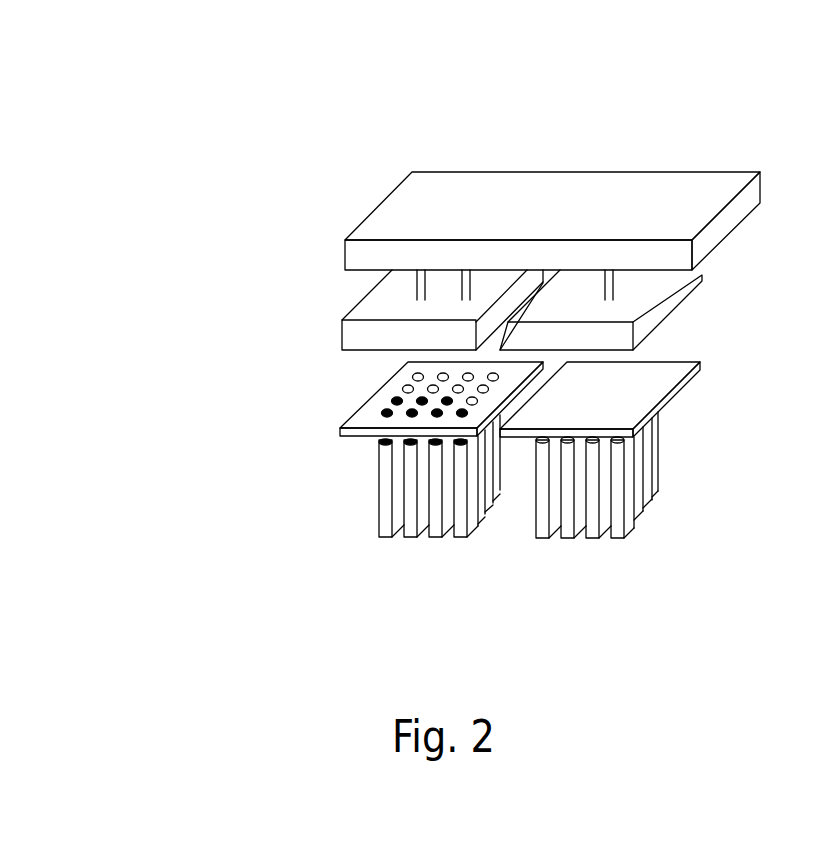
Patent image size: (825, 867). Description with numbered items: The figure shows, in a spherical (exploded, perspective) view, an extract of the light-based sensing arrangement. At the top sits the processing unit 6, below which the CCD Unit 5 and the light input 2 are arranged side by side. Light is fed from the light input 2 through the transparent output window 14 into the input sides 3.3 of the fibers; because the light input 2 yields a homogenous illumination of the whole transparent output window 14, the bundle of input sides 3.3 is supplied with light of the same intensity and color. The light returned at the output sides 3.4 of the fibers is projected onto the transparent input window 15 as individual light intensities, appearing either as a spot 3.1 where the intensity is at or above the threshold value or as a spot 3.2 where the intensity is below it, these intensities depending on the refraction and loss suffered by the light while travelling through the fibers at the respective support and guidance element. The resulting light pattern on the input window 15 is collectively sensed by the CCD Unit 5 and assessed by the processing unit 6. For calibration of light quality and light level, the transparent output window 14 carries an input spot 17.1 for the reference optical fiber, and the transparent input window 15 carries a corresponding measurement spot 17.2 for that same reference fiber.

The processing unit 6 is at (520, 193).
The CCD Unit 5 is at (399, 290).
The light input 2 is at (655, 310).
The spot due to light intensities I ≥ Ic 3.1 is at (382, 399).
The spot due to light intensities I Ic 3.2 is at (325, 430).
The measurement spot 17.2 is at (530, 505).
The output sides of the fibers 3.4 is at (391, 544).
The transparent input window 15 is at (377, 487).
The input spot 17.1 is at (656, 392).
The transparent output window 14 is at (630, 442).
The input sides of the fibers 3.3 is at (629, 540).